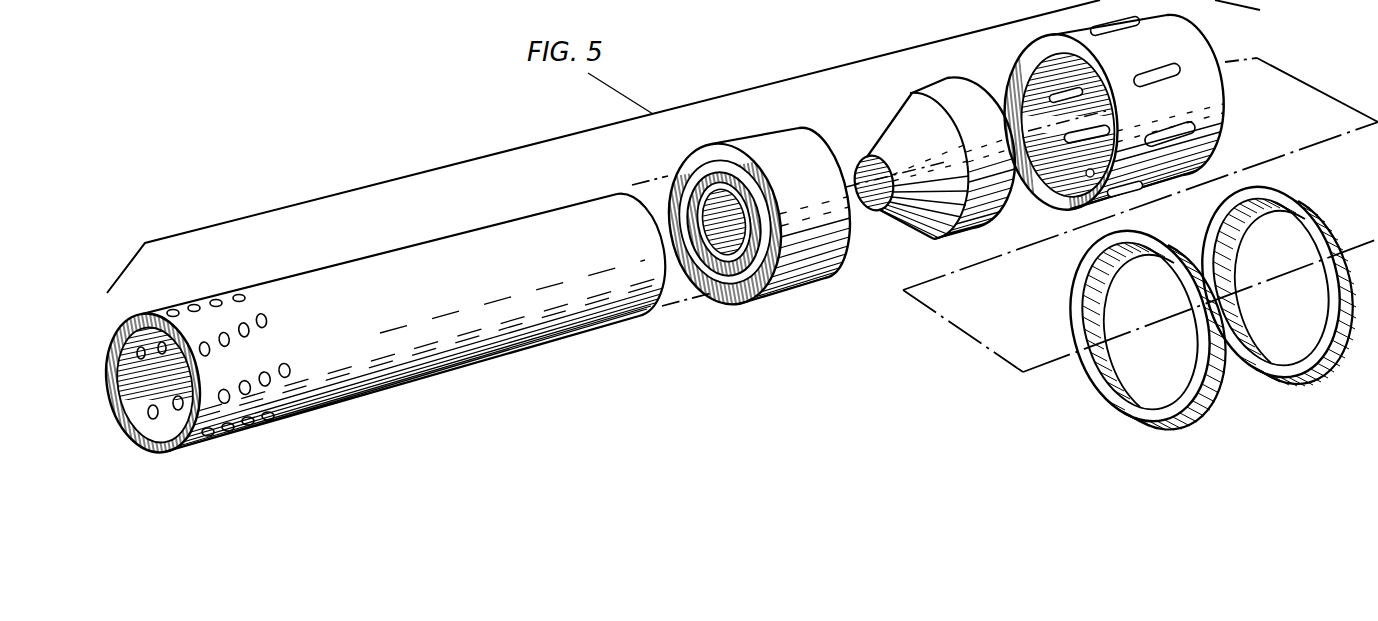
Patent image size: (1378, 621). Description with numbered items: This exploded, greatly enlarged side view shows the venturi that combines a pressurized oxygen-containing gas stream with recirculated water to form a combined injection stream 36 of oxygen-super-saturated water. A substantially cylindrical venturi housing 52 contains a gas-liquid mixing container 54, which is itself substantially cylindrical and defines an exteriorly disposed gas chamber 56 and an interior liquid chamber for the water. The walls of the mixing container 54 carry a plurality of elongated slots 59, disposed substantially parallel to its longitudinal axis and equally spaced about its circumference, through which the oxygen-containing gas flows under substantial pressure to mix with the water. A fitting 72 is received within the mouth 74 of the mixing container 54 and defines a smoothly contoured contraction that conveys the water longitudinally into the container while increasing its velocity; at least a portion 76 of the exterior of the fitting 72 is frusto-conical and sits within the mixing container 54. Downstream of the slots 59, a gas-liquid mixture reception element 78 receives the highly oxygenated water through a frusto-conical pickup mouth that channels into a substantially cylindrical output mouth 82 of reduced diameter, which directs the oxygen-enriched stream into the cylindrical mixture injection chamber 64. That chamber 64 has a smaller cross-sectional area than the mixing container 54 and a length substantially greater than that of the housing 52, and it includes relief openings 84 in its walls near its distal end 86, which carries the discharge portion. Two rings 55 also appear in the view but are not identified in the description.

The combined injection stream 36 is at (447, 353).
The mixture injection chamber 64 is at (617, 302).
The relief openings 84 is at (274, 325).
The distal end 86 is at (133, 314).
The gas-liquid mixture reception element 78 is at (777, 122).
The cylindrical output mouth 82 is at (672, 188).
The fitting 72 is at (889, 222).
The frusto-conical exterior portion 76 is at (898, 106).
The mouth 74 is at (1003, 104).
The gas-liquid mixing container 54 is at (1196, 44).
The slots 59 is at (1159, 73).
The rings 55 is at (1212, 206).
The venturi housing 52 is at (903, 0).
The gas chamber 56 is at (978, 0).